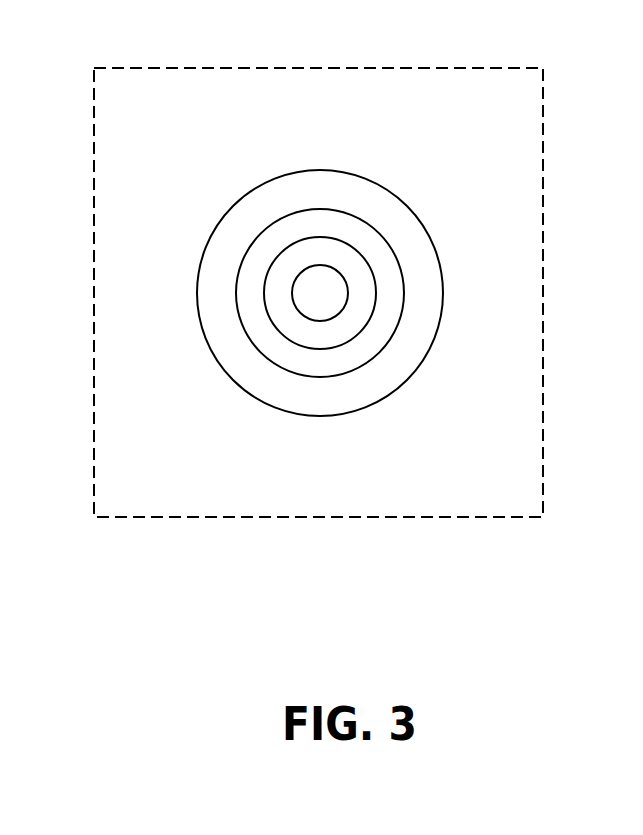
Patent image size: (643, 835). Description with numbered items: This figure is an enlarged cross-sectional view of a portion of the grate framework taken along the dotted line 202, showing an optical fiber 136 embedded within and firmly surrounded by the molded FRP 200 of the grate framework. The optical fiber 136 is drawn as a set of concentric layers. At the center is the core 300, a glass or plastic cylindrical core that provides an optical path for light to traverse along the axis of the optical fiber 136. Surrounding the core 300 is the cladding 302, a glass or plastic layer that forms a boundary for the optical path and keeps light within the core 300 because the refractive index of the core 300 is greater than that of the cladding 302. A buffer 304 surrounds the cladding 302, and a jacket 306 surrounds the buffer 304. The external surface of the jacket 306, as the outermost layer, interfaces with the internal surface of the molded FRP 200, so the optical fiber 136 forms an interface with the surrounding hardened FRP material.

The molded FRP 200 is at (395, 122).
The dotted line 202 is at (187, 68).
The optical fiber 136 is at (397, 194).
The jacket 306 is at (413, 258).
The buffer 304 is at (385, 293).
The cladding 302 is at (348, 310).
The core 300 is at (313, 287).